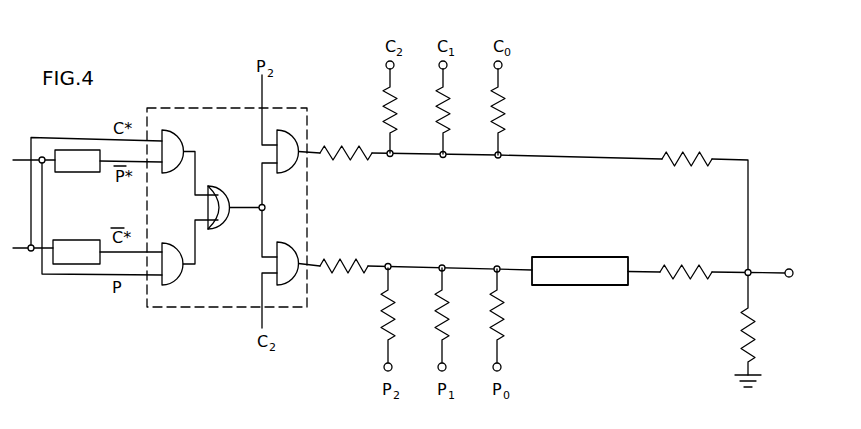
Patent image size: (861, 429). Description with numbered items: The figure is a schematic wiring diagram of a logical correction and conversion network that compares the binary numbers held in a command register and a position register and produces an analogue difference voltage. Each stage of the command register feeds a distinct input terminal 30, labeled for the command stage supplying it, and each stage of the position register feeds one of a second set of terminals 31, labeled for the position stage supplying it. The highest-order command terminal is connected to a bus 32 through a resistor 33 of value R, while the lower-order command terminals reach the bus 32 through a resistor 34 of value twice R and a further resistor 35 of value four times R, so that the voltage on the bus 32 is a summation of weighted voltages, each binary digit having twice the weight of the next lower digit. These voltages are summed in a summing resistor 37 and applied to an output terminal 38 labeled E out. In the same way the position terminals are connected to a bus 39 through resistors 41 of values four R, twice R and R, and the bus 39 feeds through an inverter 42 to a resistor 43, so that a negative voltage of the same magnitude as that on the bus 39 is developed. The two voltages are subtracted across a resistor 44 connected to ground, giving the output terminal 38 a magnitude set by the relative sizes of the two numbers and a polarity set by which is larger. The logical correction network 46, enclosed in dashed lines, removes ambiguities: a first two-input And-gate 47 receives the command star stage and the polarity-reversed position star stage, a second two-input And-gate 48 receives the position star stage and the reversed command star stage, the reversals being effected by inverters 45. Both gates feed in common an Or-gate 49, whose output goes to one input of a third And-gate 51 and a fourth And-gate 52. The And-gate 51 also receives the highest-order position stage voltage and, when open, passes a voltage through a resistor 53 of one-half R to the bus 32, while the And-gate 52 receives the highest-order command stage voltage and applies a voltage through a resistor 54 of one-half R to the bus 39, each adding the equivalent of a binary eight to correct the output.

The input terminal 30 is at (440, 67).
The terminal 31 is at (438, 367).
The bus 32 is at (425, 156).
The resistor 33 is at (397, 122).
The resistor 34 is at (450, 122).
The resistor 4R 35 is at (505, 122).
The summing resistor 37 is at (669, 155).
The output terminal 38 is at (786, 278).
The bus 39 is at (410, 266).
The resistors 41 is at (436, 300).
The inverter 42 is at (578, 257).
The resistor 43 is at (688, 265).
The resistor 44 is at (740, 321).
The inverters 45 is at (72, 172).
The logical correction network 46 is at (177, 107).
The first two-input And-gate 47 is at (183, 139).
The second two-input And-gate 48 is at (183, 276).
The Or-gate 49 is at (222, 186).
The third And-gate 51 is at (283, 173).
The fourth And-gate 52 is at (290, 238).
The resistor 53 is at (340, 163).
The resistor 54 is at (343, 259).